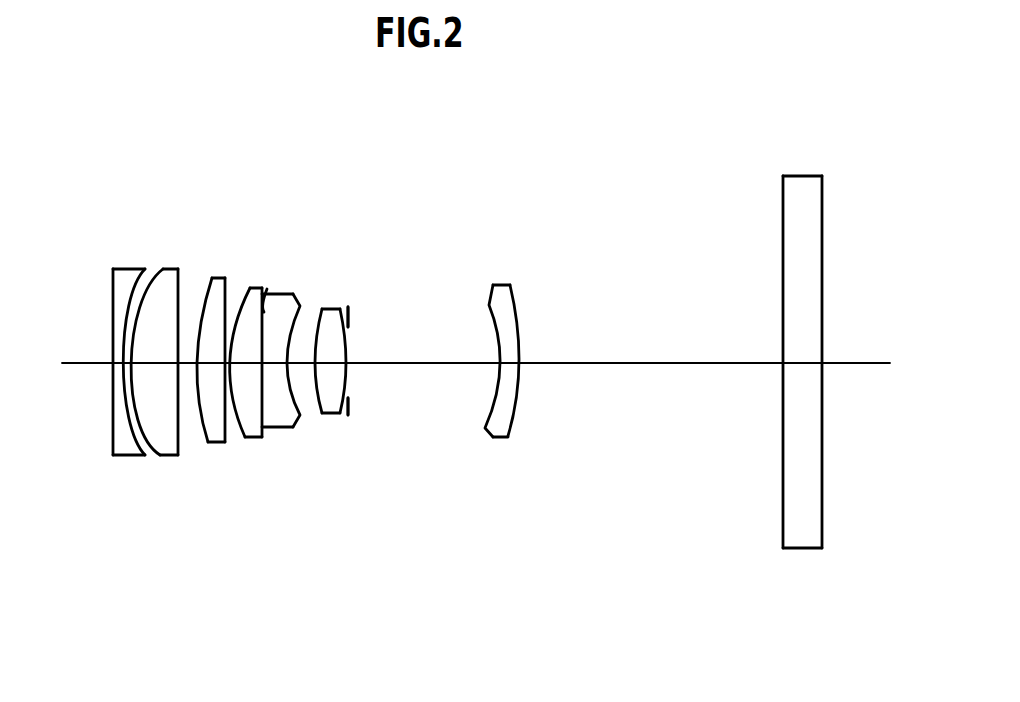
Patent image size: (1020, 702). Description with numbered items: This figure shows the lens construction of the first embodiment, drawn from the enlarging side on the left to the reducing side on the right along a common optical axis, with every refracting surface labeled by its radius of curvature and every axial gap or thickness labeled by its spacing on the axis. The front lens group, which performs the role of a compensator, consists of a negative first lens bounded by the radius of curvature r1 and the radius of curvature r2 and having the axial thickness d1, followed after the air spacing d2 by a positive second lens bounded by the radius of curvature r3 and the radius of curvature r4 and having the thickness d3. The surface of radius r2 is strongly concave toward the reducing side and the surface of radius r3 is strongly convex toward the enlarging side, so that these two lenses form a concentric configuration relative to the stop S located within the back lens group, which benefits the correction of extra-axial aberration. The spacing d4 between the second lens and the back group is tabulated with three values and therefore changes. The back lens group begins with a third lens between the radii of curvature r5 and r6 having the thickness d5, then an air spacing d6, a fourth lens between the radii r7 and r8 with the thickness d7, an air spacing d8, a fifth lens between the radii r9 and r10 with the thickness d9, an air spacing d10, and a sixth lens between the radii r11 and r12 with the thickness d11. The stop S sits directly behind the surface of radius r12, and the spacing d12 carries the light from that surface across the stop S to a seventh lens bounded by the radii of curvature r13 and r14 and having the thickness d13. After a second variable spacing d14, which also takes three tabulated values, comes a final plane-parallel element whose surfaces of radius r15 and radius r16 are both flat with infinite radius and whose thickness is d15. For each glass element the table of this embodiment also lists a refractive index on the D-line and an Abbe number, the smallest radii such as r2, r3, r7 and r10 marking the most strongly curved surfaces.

The first surface radius of curvature r1 is at (113, 318).
The second surface radius of curvature r2 is at (118, 270).
The third surface radius of curvature r3 is at (148, 307).
The fourth surface radius of curvature r4 is at (178, 300).
The fifth surface radius of curvature r5 is at (205, 300).
The sixth surface radius of curvature r6 is at (225, 300).
The seventh surface radius of curvature r7 is at (245, 290).
The eighth surface radius of curvature r8 is at (251, 287).
The ninth surface radius of curvature r9 is at (264, 312).
The tenth surface radius of curvature r10 is at (321, 311).
The eleventh surface radius of curvature r11 is at (320, 309).
The twelfth surface radius of curvature r12 is at (349, 351).
The thirteenth surface radius of curvature r13 is at (489, 305).
The fourteenth surface radius of curvature r14 is at (515, 312).
The fifteenth surface radius of curvature r15 is at (783, 274).
The sixteenth surface radius of curvature r16 is at (821, 278).
The stop S is at (349, 321).
The spacing on axis d1 is at (121, 365).
The spacing on axis d2 is at (132, 365).
The spacing on axis d3 is at (158, 365).
The spacing on axis d4 is at (190, 365).
The spacing on axis d5 is at (214, 365).
The spacing on axis d6 is at (231, 365).
The spacing on axis d7 is at (246, 365).
The spacing on axis d8 is at (258, 365).
The spacing on axis d9 is at (276, 365).
The spacing on axis d10 is at (328, 365).
The spacing on axis d11 is at (337, 365).
The spacing on axis d12 is at (407, 365).
The spacing on axis d13 is at (518, 365).
The spacing on axis d14 is at (640, 365).
The spacing on axis d15 is at (803, 365).